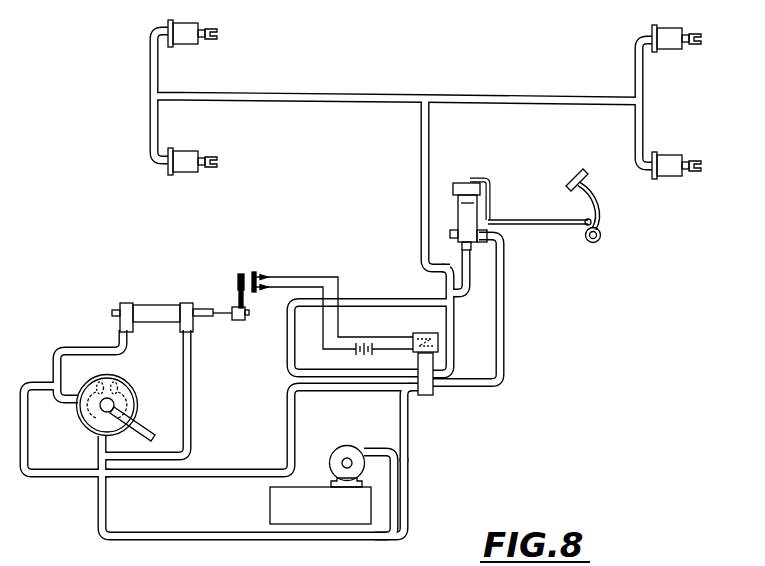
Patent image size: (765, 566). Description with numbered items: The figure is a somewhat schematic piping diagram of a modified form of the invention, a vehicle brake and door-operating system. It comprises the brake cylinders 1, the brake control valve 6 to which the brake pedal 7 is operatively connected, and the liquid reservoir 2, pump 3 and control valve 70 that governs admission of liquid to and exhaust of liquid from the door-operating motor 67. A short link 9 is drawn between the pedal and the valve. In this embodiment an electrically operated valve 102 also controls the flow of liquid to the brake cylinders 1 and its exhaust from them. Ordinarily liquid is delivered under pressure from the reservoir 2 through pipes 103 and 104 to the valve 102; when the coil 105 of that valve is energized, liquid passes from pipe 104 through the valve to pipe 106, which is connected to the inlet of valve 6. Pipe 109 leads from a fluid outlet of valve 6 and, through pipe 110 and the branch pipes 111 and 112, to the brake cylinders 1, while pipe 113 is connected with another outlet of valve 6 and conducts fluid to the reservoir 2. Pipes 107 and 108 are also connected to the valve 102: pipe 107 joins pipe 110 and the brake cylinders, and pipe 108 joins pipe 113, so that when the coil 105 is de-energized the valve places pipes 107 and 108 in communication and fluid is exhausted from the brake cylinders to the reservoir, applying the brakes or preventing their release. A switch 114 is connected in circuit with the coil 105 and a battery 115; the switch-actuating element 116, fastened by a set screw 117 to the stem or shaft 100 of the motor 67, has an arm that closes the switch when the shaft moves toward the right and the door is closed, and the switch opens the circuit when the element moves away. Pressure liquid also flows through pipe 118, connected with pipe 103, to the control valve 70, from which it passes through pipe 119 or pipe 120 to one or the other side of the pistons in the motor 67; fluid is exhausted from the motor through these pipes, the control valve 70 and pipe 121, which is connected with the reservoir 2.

The brake cylinders 1 is at (185, 25).
The liquid reservoir 2 is at (366, 502).
The pump 3 is at (334, 457).
The brake control valve 6 is at (458, 213).
The brake pedal 7 is at (575, 193).
The pedal link conduit 9 is at (489, 193).
The door-operating motor 67 is at (155, 305).
The control valve 70 is at (131, 377).
The stem or shaft 100 is at (226, 316).
The electrically operated valve 102 is at (437, 397).
The pipe 103 is at (395, 448).
The pipe 104 is at (408, 430).
The coil 105 is at (426, 333).
The pipe 106 is at (505, 361).
The pipe 107 is at (455, 340).
The pipe 108 is at (371, 378).
The pipe 109 is at (450, 234).
The pipe 110 is at (430, 130).
The pipe 111 is at (300, 94).
The pipe 112 is at (521, 97).
The pipe 113 is at (470, 274).
The switch 114 is at (253, 270).
The battery 115 is at (352, 354).
The switch-actuating element 116 is at (238, 283).
The set screw 117 is at (239, 304).
The pipe 118 is at (408, 498).
The pipe 119 is at (93, 347).
The pipe 120 is at (189, 398).
The pipe 121 is at (24, 429).